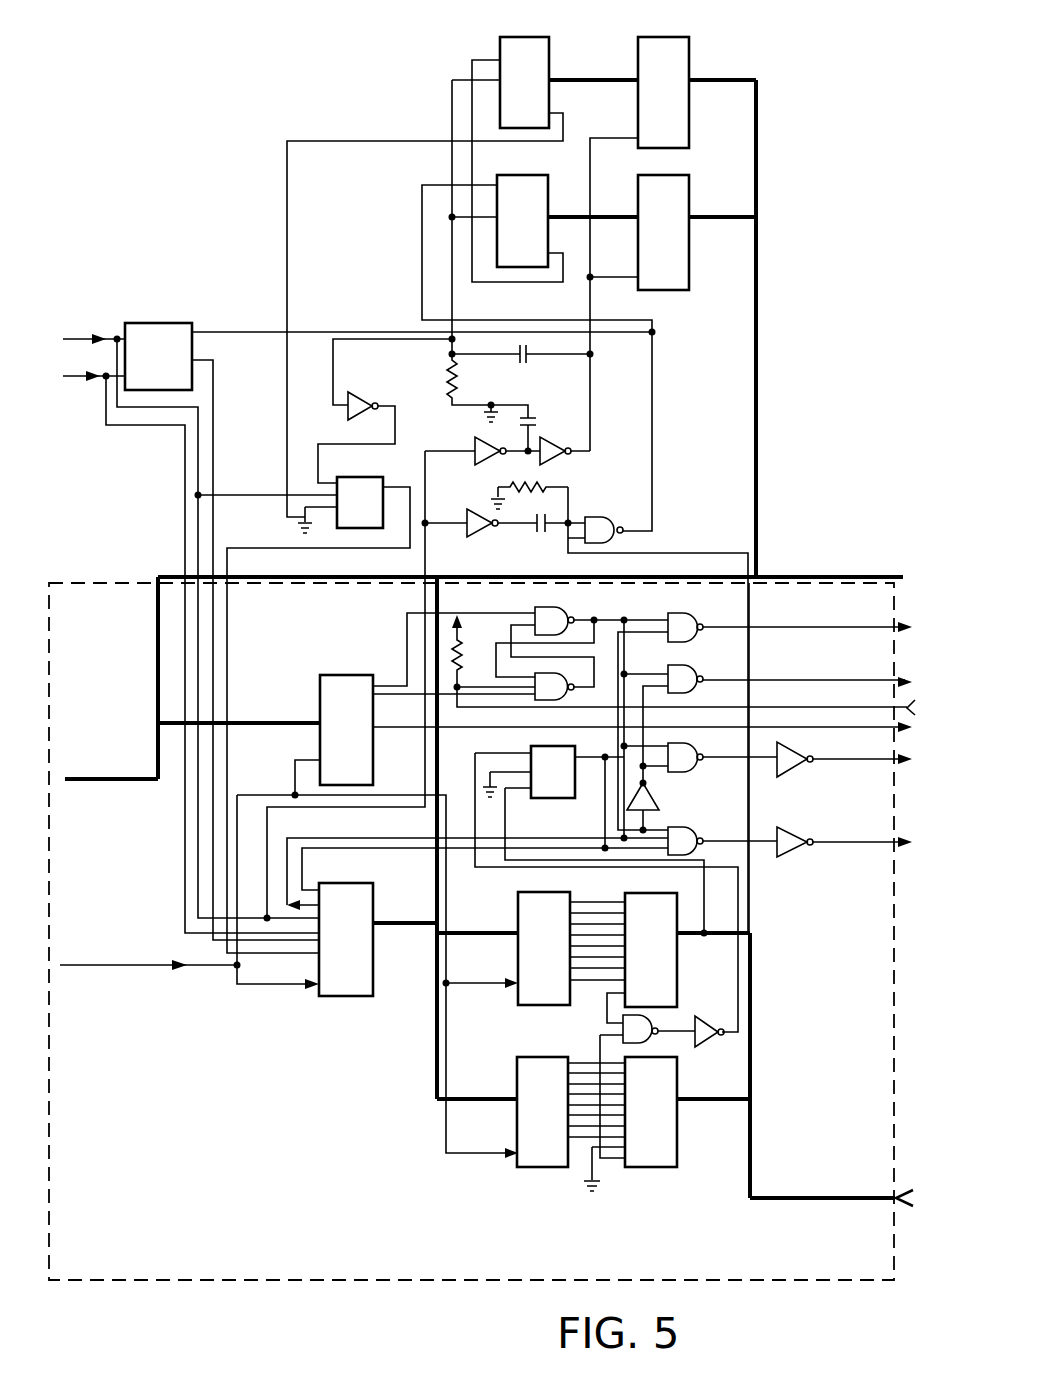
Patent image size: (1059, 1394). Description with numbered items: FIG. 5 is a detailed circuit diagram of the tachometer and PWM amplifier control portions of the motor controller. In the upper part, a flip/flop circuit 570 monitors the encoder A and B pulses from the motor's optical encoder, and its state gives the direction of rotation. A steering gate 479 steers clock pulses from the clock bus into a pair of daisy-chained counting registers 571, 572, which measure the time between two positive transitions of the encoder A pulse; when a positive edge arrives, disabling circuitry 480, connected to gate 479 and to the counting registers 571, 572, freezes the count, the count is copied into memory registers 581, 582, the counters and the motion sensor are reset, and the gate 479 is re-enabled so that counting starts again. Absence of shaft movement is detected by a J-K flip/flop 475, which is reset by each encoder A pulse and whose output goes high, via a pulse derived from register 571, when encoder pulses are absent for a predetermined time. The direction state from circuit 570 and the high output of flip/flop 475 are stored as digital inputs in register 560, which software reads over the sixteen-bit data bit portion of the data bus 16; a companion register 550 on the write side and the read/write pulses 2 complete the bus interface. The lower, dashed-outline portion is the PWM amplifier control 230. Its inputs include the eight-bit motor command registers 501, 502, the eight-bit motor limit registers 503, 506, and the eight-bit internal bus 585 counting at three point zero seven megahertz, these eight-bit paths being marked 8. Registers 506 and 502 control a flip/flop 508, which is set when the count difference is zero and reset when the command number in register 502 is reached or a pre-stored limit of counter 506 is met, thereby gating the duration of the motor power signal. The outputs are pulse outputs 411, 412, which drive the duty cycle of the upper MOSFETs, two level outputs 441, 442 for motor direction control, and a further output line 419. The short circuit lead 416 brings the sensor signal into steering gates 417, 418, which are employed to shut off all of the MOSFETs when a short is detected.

The flip/flop circuit 570 is at (168, 323).
The counting register 571 is at (525, 37).
The counting register 572 is at (538, 175).
The memory register 581 is at (684, 37).
The memory register 582 is at (680, 175).
The J-K flip/flop 475 is at (368, 477).
The disabling circuitry 480 is at (573, 413).
The steering gate 479 is at (598, 517).
The data bus 16 is at (751, 382).
The 8-bit bus 8 is at (587, 88).
The read/write lines 2 is at (107, 972).
The PWM amplifier control 230 is at (49, 1168).
The write decoder 550 is at (346, 675).
The register 560 is at (371, 883).
The steering gate 417 is at (565, 607).
The steering gate 418 is at (548, 673).
The short circuit sensor input lead 416 is at (870, 707).
The output line 419 is at (868, 731).
The level output 441 is at (867, 628).
The level output 442 is at (872, 682).
The pulse output 411 is at (871, 758).
The pulse output 412 is at (871, 841).
The flip/flop 508 is at (530, 798).
The motor limit register 503 is at (545, 892).
The motor limit register 506 is at (650, 893).
The motor command register 501 is at (552, 1167).
The motor command register 502 is at (650, 1167).
The internal bus 585 is at (750, 1057).